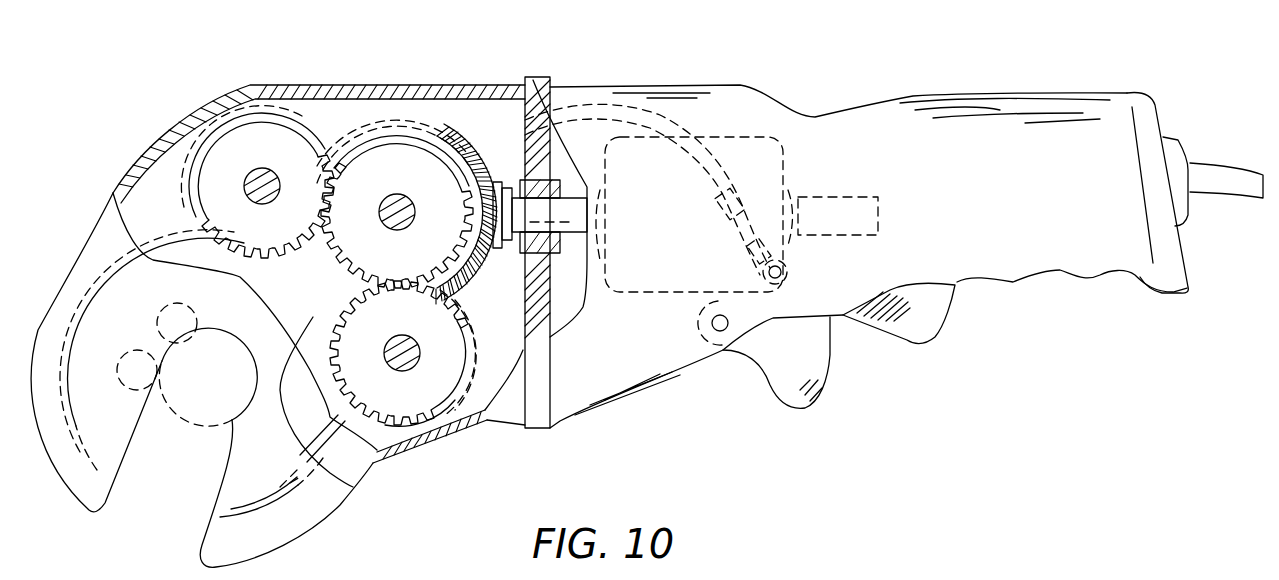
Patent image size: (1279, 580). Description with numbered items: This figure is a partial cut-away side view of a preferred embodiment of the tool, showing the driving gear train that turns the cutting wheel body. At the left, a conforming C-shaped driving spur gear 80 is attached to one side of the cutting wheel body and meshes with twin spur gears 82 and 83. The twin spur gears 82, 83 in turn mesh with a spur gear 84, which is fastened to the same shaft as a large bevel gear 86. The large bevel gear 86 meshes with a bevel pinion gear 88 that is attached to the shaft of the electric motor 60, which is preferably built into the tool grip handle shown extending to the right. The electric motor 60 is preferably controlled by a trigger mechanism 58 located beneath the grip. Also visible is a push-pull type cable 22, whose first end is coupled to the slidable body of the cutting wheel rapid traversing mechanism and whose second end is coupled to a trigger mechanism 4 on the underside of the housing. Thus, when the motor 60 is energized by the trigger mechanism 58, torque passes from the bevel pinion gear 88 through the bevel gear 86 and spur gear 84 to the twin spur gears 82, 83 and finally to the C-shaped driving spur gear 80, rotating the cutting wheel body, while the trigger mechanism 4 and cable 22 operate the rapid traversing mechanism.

The trigger mechanism 4 is at (787, 392).
The push-pull type cable 22 is at (667, 118).
The trigger mechanism 58 is at (910, 343).
The electric motor 60 is at (717, 138).
The C-shaped driving spur gear 80 is at (303, 460).
The twin spur gear 82 is at (272, 125).
The twin spur gear 83 is at (447, 393).
The spur gear 84 is at (373, 150).
The bevel gear 86 is at (458, 130).
The bevel pinion gear 88 is at (513, 190).